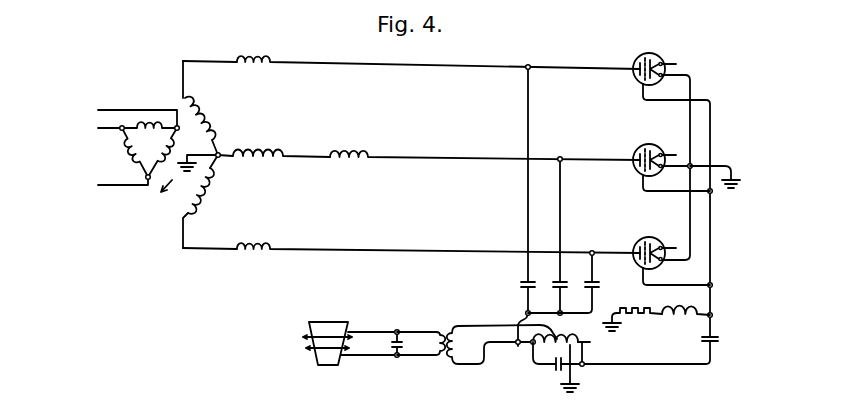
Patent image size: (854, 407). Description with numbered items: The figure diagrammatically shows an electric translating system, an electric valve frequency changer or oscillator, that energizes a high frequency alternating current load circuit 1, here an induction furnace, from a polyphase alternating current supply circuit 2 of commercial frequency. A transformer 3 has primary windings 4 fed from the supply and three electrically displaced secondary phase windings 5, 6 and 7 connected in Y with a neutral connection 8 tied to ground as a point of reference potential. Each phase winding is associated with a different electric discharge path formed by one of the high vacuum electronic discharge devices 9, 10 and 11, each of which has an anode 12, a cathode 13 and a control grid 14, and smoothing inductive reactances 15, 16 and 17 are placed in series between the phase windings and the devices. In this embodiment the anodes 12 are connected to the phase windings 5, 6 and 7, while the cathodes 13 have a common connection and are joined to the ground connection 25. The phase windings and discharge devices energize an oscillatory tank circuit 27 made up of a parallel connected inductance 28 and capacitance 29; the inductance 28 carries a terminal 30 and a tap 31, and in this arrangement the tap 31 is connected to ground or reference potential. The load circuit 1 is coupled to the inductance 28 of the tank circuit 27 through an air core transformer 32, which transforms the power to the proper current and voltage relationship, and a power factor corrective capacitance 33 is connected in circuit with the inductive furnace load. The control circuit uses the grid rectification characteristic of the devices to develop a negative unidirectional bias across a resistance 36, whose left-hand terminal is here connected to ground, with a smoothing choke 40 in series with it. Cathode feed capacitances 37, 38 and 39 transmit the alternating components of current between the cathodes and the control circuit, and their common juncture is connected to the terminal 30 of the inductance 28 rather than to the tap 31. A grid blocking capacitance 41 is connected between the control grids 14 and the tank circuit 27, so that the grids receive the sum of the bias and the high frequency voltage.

The alternating current load circuit 1 is at (305, 327).
The polyphase alternating current supply circuit 2 is at (137, 147).
The transformer 3 is at (168, 181).
The primary windings 4 is at (139, 132).
The secondary phase winding 5 is at (206, 127).
The secondary phase winding 6 is at (257, 149).
The secondary phase winding 7 is at (208, 194).
The neutral connection 8 is at (222, 158).
The electronic discharge device 9 is at (642, 52).
The electronic discharge device 10 is at (641, 146).
The electronic discharge device 11 is at (638, 240).
The anode 12 is at (634, 78).
The cathode 13 is at (656, 78).
The control grid 14 is at (650, 54).
The smoothing inductive reactance 15 is at (260, 68).
The smoothing inductive reactance 16 is at (346, 152).
The smoothing inductive reactance 17 is at (253, 243).
The ground connection 25 is at (738, 178).
The tank circuit 27 is at (608, 391).
The inductance 28 is at (594, 345).
The capacitance 29 is at (556, 369).
The terminal 30 is at (518, 345).
The tap 31 is at (562, 338).
The air core transformer 32 is at (447, 357).
The capacitance 33 is at (390, 345).
The resistance 36 is at (640, 311).
The cathode feed capacitance 37 is at (521, 283).
The cathode feed capacitance 38 is at (554, 284).
The cathode feed capacitance 39 is at (586, 284).
The smoothing inductance 40 is at (668, 322).
The grid blocking capacitance 41 is at (716, 340).